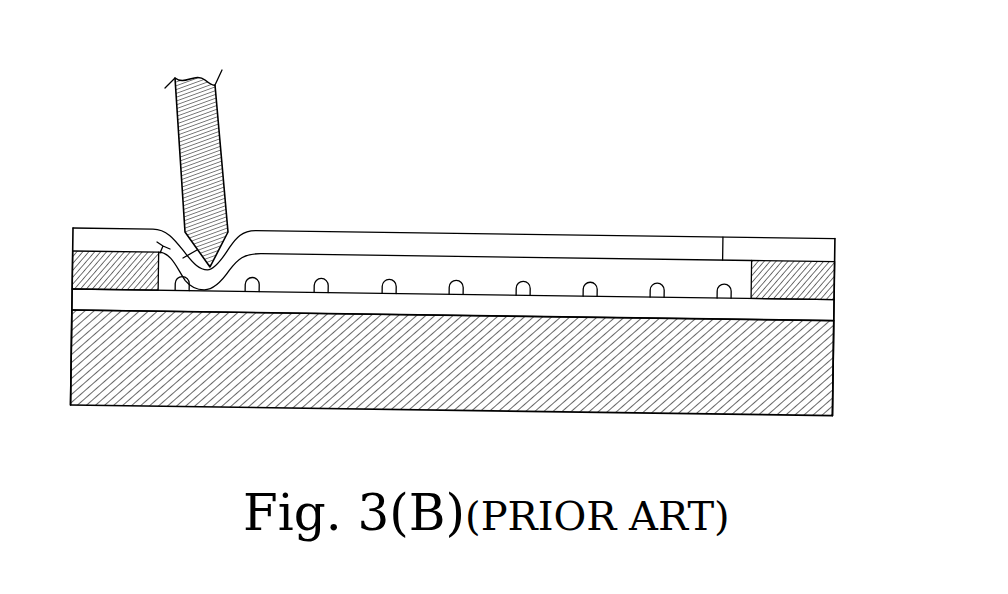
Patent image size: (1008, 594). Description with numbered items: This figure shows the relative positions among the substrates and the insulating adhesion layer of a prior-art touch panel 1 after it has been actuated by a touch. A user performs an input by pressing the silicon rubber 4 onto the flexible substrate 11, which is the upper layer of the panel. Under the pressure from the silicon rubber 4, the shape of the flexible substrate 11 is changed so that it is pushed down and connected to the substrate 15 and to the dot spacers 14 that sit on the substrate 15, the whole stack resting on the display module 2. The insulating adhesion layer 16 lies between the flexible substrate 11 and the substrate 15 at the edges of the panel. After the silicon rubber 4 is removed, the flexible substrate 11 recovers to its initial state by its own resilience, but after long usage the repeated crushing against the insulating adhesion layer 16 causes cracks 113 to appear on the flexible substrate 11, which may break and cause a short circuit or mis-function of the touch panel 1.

The touch panel 1 is at (70, 228).
The display module 2 is at (800, 371).
The silicon rubber 4 is at (188, 175).
The flexible substrate 11 is at (805, 247).
The dot spacers 14 is at (660, 287).
The substrate 15 is at (800, 316).
The insulating adhesion layer 16 is at (800, 281).
The cracks 113 is at (163, 246).